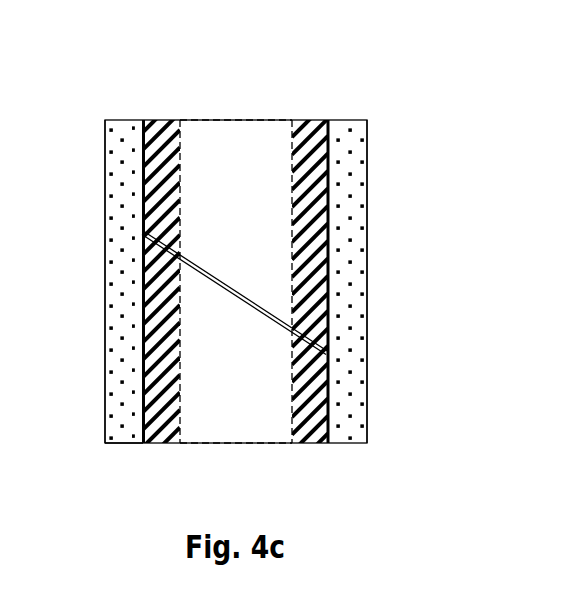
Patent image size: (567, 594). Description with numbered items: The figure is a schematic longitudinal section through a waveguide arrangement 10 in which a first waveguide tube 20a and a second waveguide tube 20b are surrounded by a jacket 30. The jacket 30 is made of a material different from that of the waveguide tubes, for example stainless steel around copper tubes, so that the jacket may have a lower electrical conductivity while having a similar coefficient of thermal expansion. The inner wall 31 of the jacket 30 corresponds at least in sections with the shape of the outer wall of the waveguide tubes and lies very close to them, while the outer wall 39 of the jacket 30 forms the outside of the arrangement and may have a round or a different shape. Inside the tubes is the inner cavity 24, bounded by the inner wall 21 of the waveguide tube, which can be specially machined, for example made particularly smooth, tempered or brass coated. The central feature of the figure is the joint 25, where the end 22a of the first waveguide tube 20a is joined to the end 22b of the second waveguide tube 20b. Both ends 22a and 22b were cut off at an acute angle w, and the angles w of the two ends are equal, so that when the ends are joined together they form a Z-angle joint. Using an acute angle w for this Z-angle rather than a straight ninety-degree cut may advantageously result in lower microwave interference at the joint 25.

The waveguide arrangement 10 is at (364, 75).
The first waveguide tube 20a is at (327, 240).
The second waveguide tube 20b is at (147, 323).
The inner wall 21 is at (236, 254).
The end of first waveguide tube 22a is at (352, 318).
The end of second waveguide tube 22b is at (123, 275).
The inner cavity 24 is at (212, 202).
The joint 25 is at (198, 242).
The jacket 30 is at (107, 435).
The inner wall of the jacket 31 is at (322, 168).
The outer wall of the jacket 39 is at (235, 278).
The acute angle w is at (198, 284).